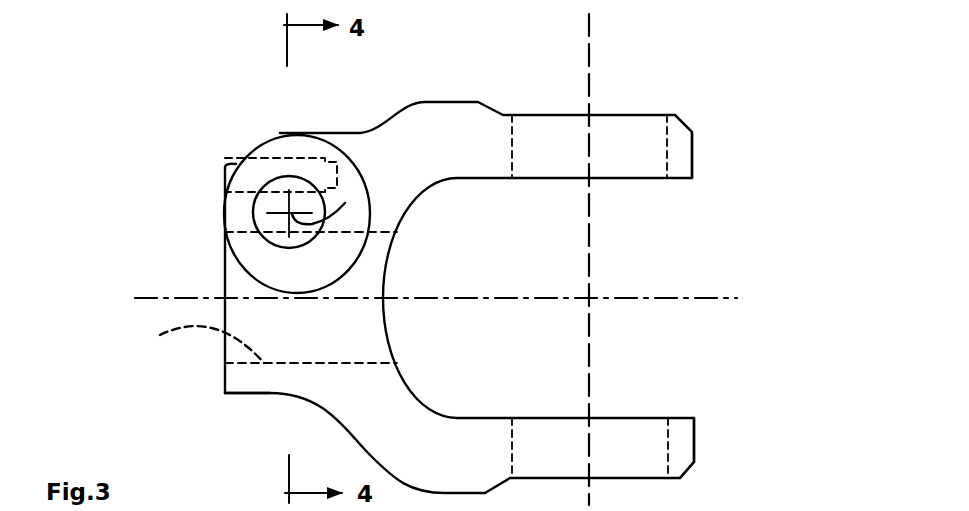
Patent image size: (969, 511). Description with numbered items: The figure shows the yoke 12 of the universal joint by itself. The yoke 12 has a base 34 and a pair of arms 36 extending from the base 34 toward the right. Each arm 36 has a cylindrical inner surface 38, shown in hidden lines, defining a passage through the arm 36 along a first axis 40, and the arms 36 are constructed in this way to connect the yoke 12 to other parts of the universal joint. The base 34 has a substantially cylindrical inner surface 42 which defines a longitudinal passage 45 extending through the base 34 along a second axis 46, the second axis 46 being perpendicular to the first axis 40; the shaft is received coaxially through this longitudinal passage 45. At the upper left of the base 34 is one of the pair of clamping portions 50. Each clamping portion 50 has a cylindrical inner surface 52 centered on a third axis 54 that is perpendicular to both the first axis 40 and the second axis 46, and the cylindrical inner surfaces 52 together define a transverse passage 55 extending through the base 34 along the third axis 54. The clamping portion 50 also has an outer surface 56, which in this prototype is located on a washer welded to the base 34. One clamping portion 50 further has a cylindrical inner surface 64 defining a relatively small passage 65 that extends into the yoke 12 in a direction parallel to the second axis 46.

The yoke 12 is at (155, 86).
The base 34 is at (220, 386).
The arms 36 is at (696, 157).
The cylindrical inner surface 38 is at (667, 147).
The first axis 40 is at (591, 80).
The cylindrical inner surface 42 is at (198, 343).
The longitudinal passage 45 is at (206, 352).
The second axis 46 is at (676, 298).
The clamping portions 50 is at (272, 137).
The cylindrical inner surface 52 is at (277, 245).
The third axis 54 is at (345, 203).
The transverse passage 55 is at (262, 202).
The outer surface 56 is at (265, 265).
The cylindrical inner surface 64 is at (231, 164).
The relatively small passage 65 is at (214, 169).